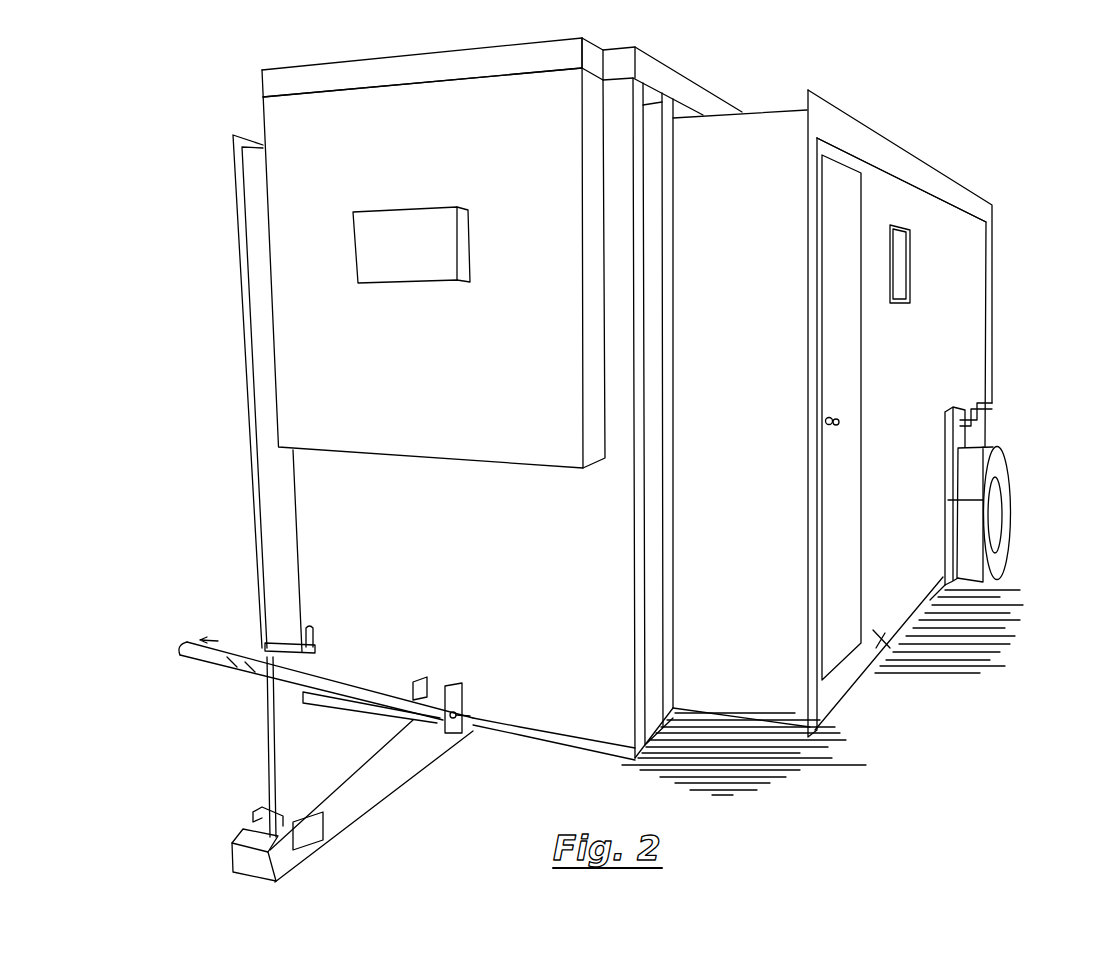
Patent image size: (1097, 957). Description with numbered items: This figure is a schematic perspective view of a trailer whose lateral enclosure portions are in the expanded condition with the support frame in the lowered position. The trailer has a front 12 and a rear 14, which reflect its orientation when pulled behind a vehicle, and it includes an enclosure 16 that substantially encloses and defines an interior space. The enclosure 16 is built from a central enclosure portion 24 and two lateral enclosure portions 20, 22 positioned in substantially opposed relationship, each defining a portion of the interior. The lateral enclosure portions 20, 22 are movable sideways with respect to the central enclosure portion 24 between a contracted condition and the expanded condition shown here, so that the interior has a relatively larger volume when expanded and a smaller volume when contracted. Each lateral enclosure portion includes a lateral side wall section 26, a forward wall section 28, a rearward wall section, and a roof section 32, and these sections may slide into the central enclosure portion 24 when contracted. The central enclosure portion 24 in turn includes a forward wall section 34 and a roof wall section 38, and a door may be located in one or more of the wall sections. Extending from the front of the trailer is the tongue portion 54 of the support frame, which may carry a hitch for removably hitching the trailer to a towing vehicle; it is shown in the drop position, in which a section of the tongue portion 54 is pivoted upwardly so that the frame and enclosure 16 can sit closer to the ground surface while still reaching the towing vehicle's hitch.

The front 12 is at (240, 514).
The rear 14 is at (1003, 243).
The enclosure 16 is at (290, 402).
The lateral enclosure portion 20 is at (262, 257).
The lateral enclosure portion 22 is at (872, 630).
The central enclosure portion 24 is at (572, 707).
The lateral side wall section 26 is at (963, 335).
The forward wall section 28 is at (792, 662).
The roof section 32 is at (763, 111).
The forward wall section 34 is at (307, 560).
The roof wall section 38 is at (452, 50).
The tongue portion 54 is at (400, 780).